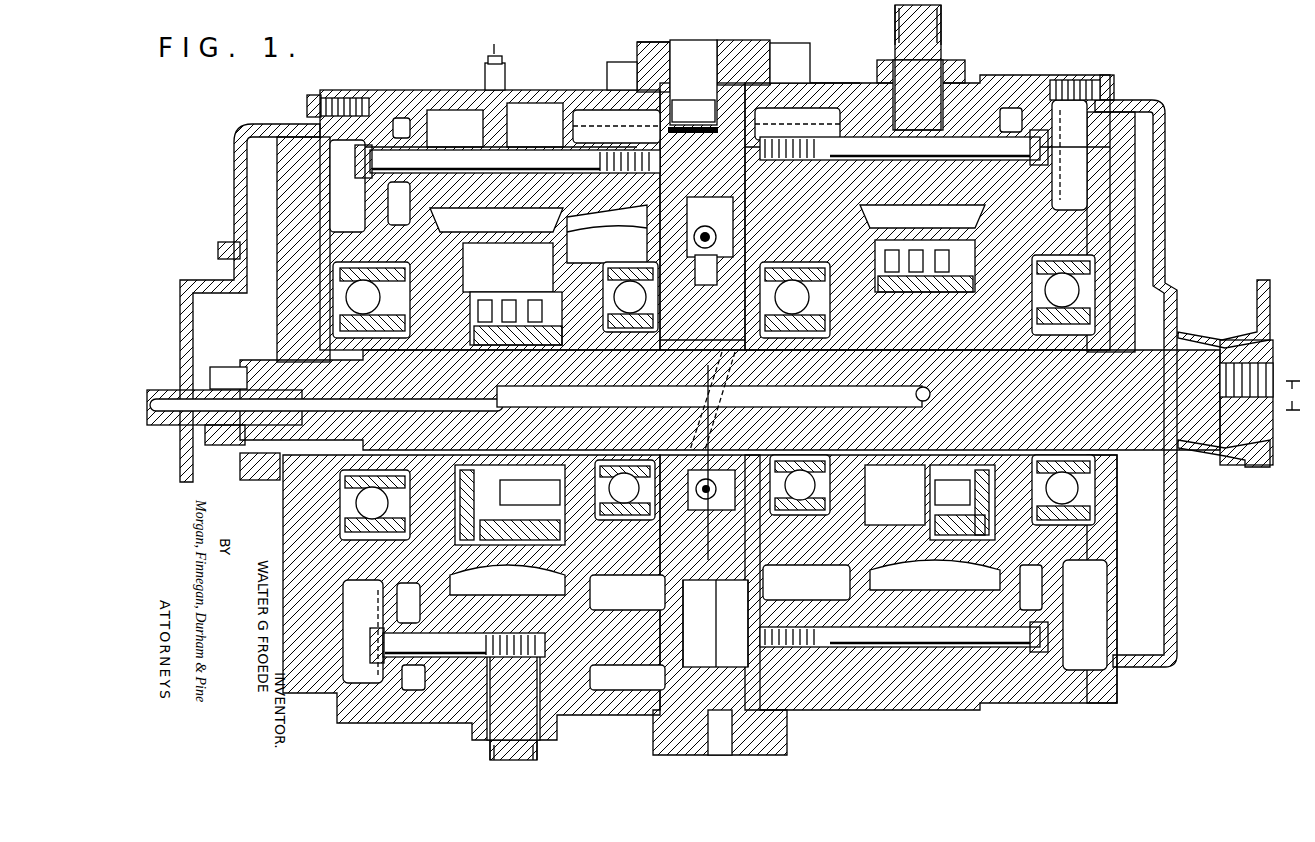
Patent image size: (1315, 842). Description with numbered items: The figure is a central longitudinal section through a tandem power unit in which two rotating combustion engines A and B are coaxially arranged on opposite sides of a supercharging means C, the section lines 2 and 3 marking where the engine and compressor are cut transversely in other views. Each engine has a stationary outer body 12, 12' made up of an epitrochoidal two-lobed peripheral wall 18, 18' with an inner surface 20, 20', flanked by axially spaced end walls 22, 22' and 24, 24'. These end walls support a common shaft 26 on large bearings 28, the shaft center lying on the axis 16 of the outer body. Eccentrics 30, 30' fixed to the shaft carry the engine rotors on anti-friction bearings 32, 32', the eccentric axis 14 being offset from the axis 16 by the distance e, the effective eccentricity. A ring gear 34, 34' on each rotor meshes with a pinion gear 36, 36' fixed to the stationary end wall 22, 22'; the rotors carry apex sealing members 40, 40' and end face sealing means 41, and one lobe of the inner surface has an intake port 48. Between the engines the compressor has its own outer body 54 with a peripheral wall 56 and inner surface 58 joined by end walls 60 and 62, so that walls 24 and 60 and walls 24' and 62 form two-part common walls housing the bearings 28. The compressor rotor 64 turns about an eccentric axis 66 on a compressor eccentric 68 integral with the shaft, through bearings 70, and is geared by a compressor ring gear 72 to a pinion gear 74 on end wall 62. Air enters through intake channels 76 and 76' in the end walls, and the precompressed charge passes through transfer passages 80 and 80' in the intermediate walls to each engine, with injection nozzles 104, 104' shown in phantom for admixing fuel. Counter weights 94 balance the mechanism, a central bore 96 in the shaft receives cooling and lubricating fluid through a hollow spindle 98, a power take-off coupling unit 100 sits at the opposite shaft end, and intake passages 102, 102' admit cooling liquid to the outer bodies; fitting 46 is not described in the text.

The outer body 12 is at (476, 378).
The outer body 12' is at (941, 363).
The axis of the engine eccentrics 14 is at (1279, 438).
The axis of the outer body 16 is at (1283, 372).
The peripheral wall 18 is at (501, 108).
The peripheral wall 18' is at (927, 100).
The inner surface 20 is at (507, 404).
The inner surface 20' is at (904, 391).
The end wall 22 is at (338, 89).
The end wall 22' is at (1055, 62).
The end wall 24 is at (618, 71).
The end wall 24' is at (835, 56).
The common shaft 26 is at (683, 400).
The bearings 28 is at (714, 397).
The eccentric 30 is at (518, 338).
The eccentric 30' is at (925, 306).
The anti-friction bearings 32 is at (516, 314).
The anti-friction bearings 32' is at (917, 279).
The ring gear 34 is at (511, 518).
The ring gear 34' is at (960, 509).
The pinion gear 36 is at (510, 505).
The pinion gear 36' is at (962, 502).
The sealing members 40 is at (496, 220).
The sealing members 40' is at (922, 248).
The end face sealing means 41 is at (548, 262).
The fitting 46 is at (485, 78).
The intake port 48 is at (1050, 135).
The outer body 54 is at (728, 34).
The peripheral wall 56 is at (693, 112).
The inner surface 58 is at (722, 142).
The end wall 60 is at (657, 364).
The end wall 62 is at (755, 364).
The compressor rotor 64 is at (714, 623).
The axis 66 is at (665, 418).
The compressor eccentric 68 is at (702, 310).
The anti-friction bearings 70 is at (714, 240).
The compressor ring gear 72 is at (718, 260).
The pinion gear 74 is at (675, 350).
The intake channel 76 is at (616, 126).
The intake channel 76' is at (797, 124).
The transfer passage 80 is at (607, 237).
The transfer passage 80' is at (895, 495).
The counter weights 94 is at (284, 221).
The central bore 96 is at (713, 396).
The hollow spindle 98 is at (162, 370).
The power take-off coupling unit 100 is at (1258, 294).
The intake passage 102 is at (544, 705).
The intake passage 102' is at (921, 66).
The injection nozzle 104 is at (634, 233).
The injection nozzle 104' is at (806, 582).
The section line 2— 2 is at (494, 63).
The section line 3— 3 is at (680, 125).
The rotating combustion engine A is at (533, 68).
The rotating combustion engine B is at (967, 50).
The supercharging means C is at (704, 52).
The distance e is at (1293, 395).